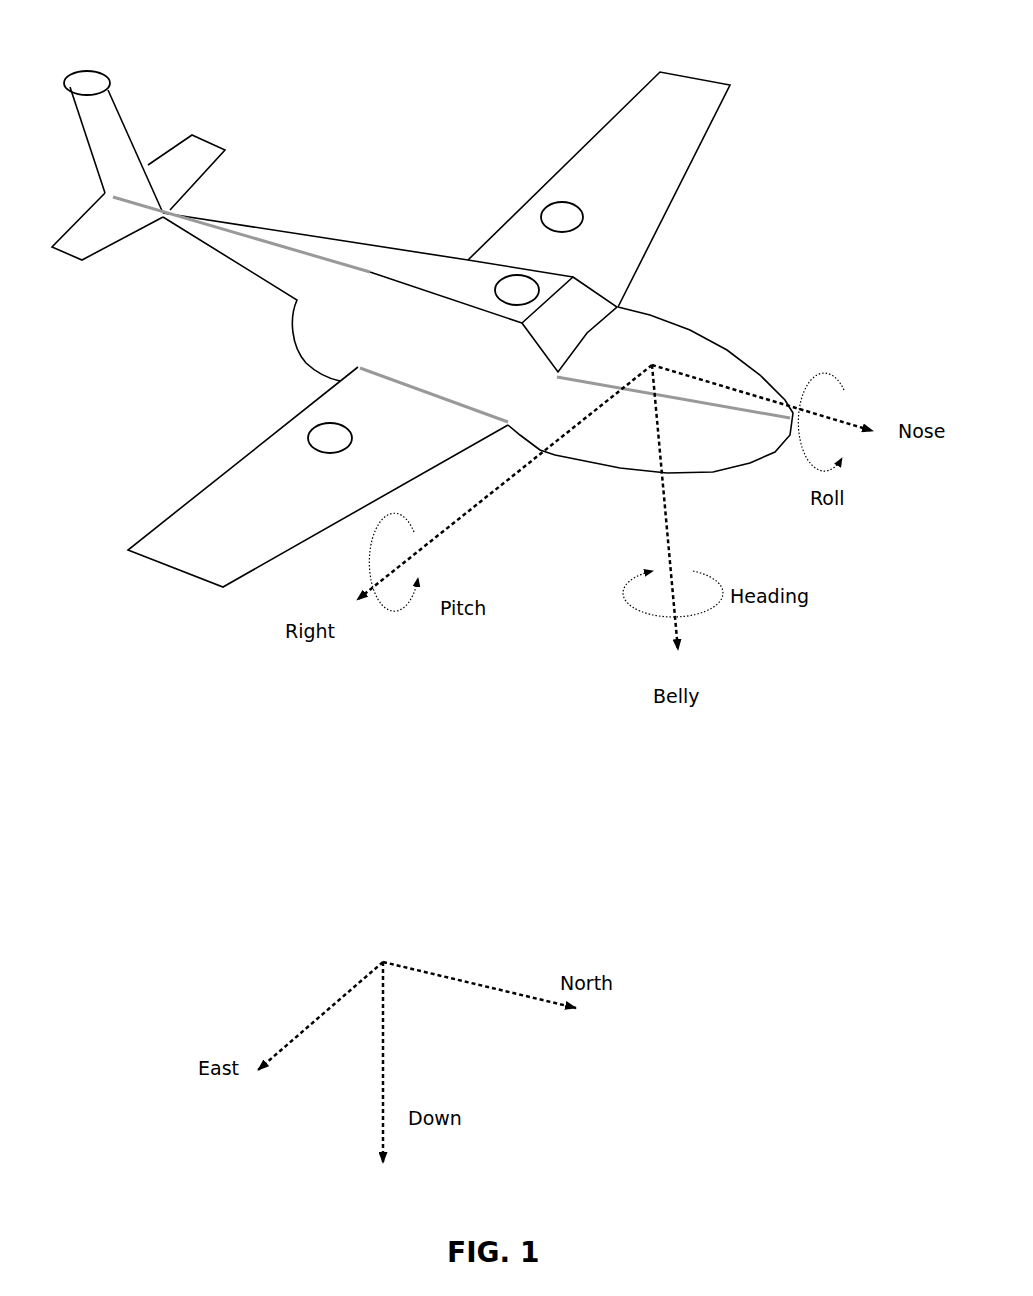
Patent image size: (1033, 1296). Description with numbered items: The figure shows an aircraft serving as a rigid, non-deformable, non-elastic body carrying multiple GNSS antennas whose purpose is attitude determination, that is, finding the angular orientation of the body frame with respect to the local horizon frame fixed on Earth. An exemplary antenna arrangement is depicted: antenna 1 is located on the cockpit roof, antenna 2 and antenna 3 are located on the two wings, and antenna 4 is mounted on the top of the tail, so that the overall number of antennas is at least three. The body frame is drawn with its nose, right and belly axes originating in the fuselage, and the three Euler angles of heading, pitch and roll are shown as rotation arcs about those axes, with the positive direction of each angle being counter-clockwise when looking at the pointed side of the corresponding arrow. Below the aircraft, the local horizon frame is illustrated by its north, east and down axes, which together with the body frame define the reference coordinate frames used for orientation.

The antenna 1 is at (461, 307).
The antenna 2 is at (549, 196).
The antenna 3 is at (272, 452).
The antenna 4 is at (79, 61).